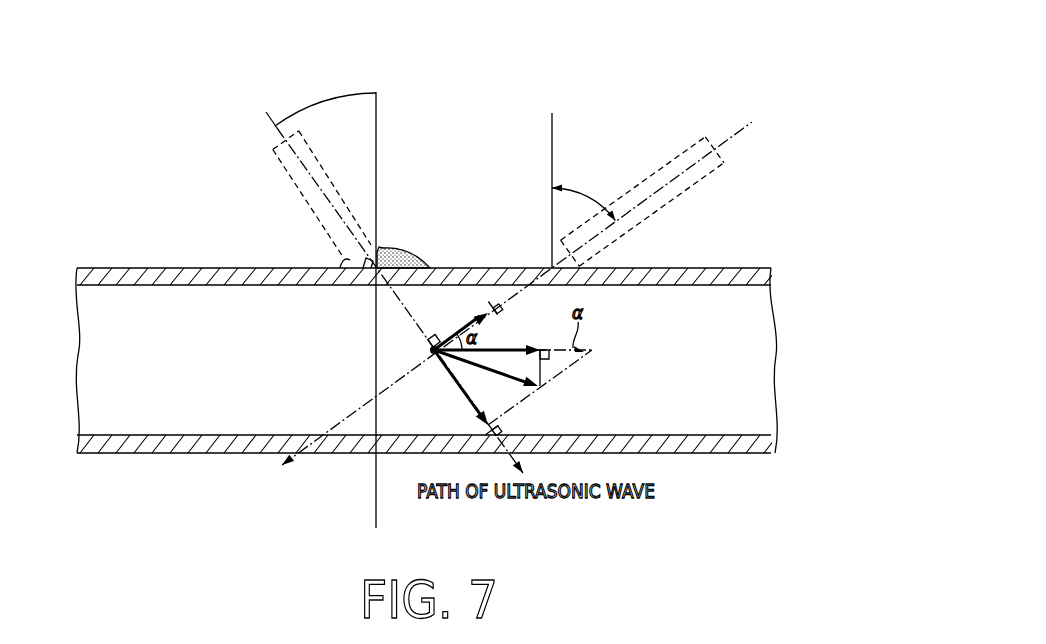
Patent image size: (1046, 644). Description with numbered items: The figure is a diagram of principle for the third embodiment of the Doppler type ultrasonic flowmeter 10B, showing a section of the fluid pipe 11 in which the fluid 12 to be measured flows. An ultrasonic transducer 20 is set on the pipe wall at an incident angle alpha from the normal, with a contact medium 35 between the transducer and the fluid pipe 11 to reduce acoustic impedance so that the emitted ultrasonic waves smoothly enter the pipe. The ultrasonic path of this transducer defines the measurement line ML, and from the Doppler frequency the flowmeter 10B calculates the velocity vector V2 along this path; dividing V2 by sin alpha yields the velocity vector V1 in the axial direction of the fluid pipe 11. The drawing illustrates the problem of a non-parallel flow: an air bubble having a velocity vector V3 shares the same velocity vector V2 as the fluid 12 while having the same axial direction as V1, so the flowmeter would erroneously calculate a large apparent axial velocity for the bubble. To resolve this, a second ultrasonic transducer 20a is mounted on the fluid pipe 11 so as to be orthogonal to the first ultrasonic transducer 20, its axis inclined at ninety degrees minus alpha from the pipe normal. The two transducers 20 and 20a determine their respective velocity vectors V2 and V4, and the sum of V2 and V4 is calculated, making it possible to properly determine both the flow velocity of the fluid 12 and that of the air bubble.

The Doppler type ultrasonic flowmeter 10B is at (488, 150).
The fluid pipe 11 is at (717, 268).
The fluid to be measured 12 is at (744, 356).
The ultrasonic transducer 20 is at (340, 188).
The ultrasonic transducer 20a is at (690, 140).
The contact medium 35 is at (403, 249).
The measurement line ML is at (405, 315).
The velocity vector in the axial direction of the fluid pipe V1 is at (492, 355).
The velocity vector in the direction of the ultrasonic path V2 is at (468, 393).
The velocity vector of the air bubble V3 is at (498, 378).
The velocity vector determined by the other transducer V4 is at (468, 321).